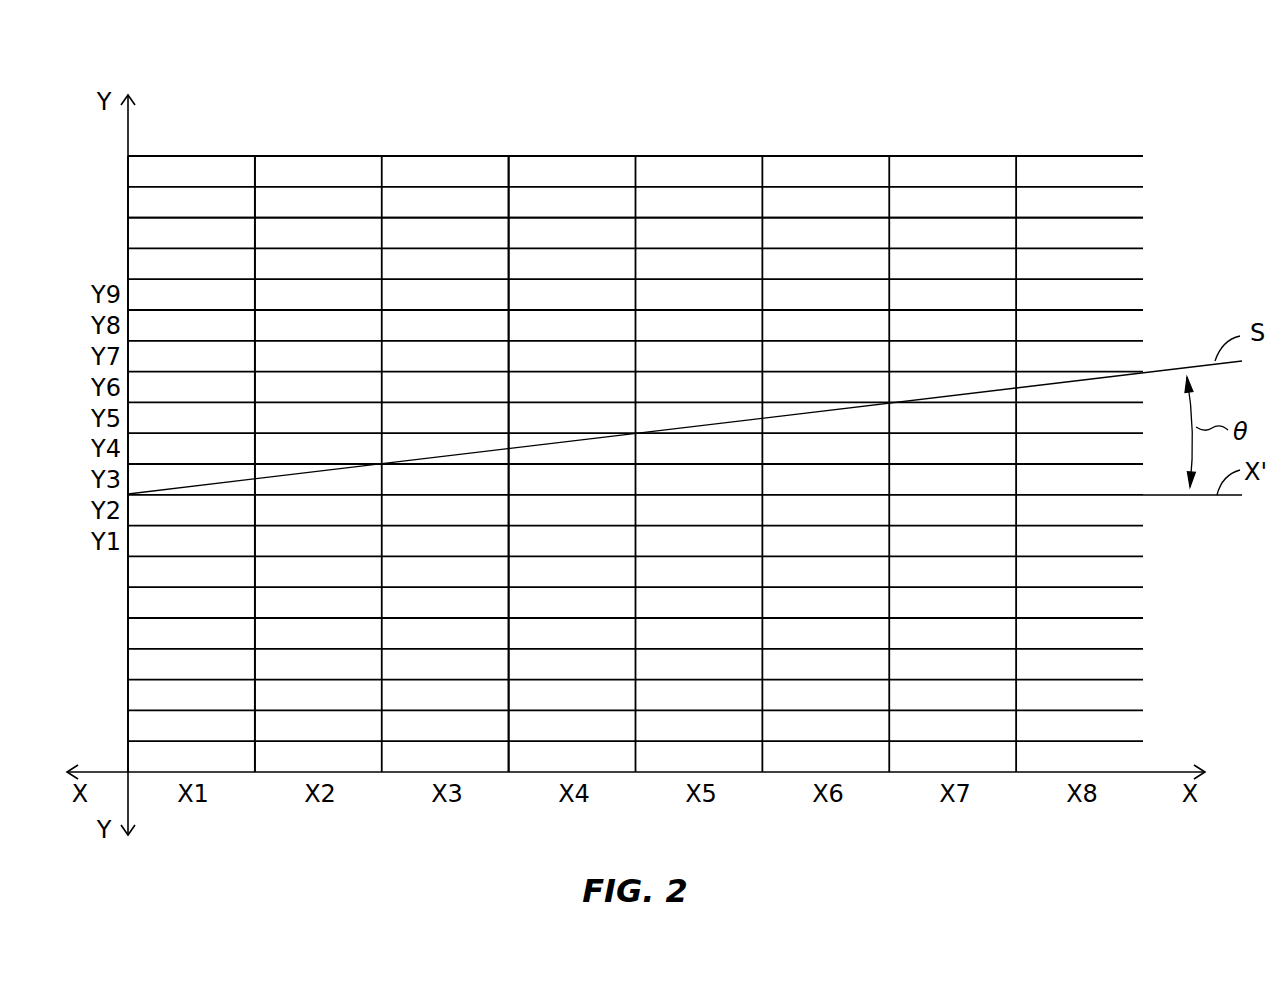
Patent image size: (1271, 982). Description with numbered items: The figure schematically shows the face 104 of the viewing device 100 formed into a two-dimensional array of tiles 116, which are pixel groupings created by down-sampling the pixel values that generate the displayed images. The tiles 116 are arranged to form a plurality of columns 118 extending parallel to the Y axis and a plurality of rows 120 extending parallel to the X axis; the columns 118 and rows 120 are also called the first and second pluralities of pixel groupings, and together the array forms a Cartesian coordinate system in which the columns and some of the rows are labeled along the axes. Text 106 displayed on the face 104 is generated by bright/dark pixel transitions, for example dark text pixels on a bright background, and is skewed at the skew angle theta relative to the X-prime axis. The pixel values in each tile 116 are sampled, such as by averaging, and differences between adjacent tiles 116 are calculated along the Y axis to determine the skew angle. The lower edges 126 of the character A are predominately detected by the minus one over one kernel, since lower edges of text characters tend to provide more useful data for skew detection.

The viewing device 100 is at (910, 87).
The face 104 is at (1067, 155).
The text 106 is at (992, 363).
The tiles 116 is at (543, 167).
The columns 118 is at (308, 155).
The rows 120 is at (1144, 202).
The lower edges 126 is at (220, 473).